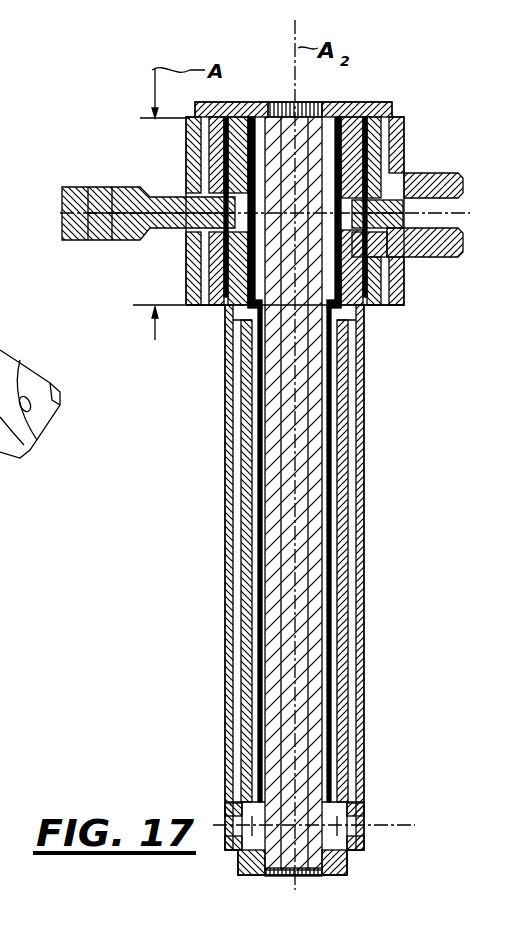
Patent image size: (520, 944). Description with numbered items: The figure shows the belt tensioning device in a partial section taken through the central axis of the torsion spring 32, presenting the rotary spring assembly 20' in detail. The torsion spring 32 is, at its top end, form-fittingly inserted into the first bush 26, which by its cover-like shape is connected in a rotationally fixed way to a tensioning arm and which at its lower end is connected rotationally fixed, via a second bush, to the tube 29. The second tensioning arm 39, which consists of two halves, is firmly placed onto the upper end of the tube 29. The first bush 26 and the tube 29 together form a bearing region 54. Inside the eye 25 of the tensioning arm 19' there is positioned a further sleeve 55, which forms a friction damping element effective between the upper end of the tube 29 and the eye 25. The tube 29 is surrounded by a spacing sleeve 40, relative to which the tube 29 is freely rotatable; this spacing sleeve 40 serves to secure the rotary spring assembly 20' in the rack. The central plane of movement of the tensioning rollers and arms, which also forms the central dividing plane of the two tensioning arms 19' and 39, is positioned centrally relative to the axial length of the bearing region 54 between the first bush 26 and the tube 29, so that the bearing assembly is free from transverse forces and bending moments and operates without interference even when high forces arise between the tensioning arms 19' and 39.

The tensioning arm 19' is at (425, 191).
The rotary spring assembly 20' is at (242, 488).
The eye 25 is at (398, 145).
The first bush 26 is at (328, 138).
The tube 29 is at (357, 536).
The torsion spring 32 is at (312, 482).
The second tensioning arm 39 is at (100, 185).
The spacing sleeve 40 is at (360, 758).
The bearing region 54 is at (346, 305).
The further sleeve 55 is at (386, 276).